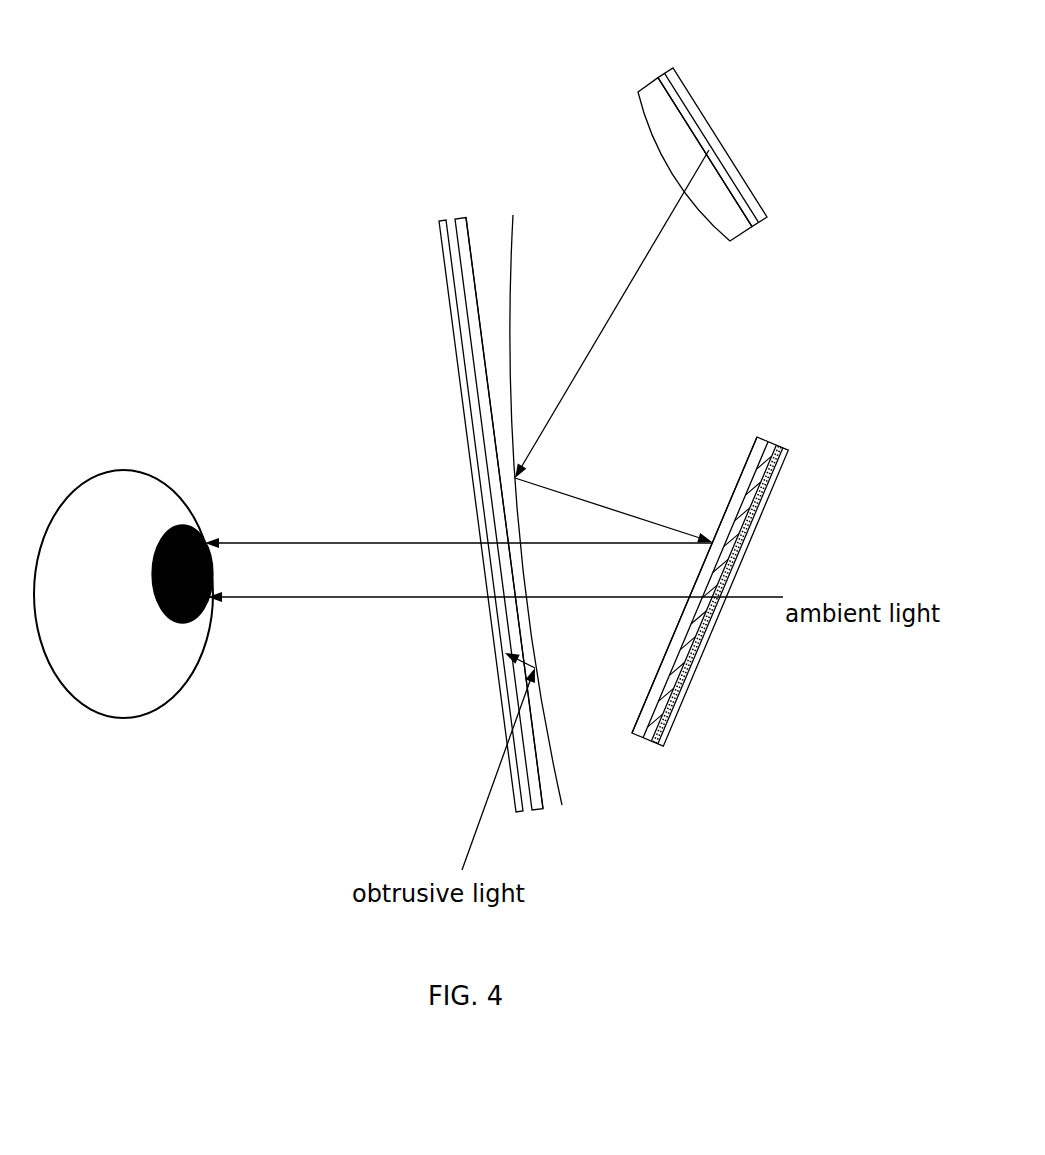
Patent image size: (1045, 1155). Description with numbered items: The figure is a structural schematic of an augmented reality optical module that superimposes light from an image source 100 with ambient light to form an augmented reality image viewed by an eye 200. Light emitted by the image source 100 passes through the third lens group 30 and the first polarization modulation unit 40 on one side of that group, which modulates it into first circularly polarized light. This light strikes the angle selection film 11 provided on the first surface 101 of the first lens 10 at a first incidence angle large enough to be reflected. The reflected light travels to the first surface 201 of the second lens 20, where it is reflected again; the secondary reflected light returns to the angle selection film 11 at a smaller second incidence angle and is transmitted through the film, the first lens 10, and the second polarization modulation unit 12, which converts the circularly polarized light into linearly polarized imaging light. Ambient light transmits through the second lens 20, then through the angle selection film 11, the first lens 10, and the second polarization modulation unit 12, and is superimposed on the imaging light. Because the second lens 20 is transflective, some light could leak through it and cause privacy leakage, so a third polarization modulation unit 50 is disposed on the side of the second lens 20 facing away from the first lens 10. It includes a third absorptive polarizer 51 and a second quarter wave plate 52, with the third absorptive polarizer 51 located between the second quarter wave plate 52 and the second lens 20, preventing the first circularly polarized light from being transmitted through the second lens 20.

The first lens 10 is at (506, 470).
The angle selection film 11 is at (513, 215).
The second polarization modulation unit 12 is at (440, 225).
The first surface 101 is at (489, 303).
The second lens 20 is at (768, 588).
The first surface 201 is at (714, 512).
The third lens group 30 is at (638, 93).
The first polarization modulation unit 40 is at (664, 73).
The image source 100 is at (684, 125).
The third polarization modulation unit 50 is at (773, 593).
The third absorptive polarizer 51 is at (772, 478).
The second quarter wave plate 52 is at (762, 508).
The eye of user 200 is at (117, 470).